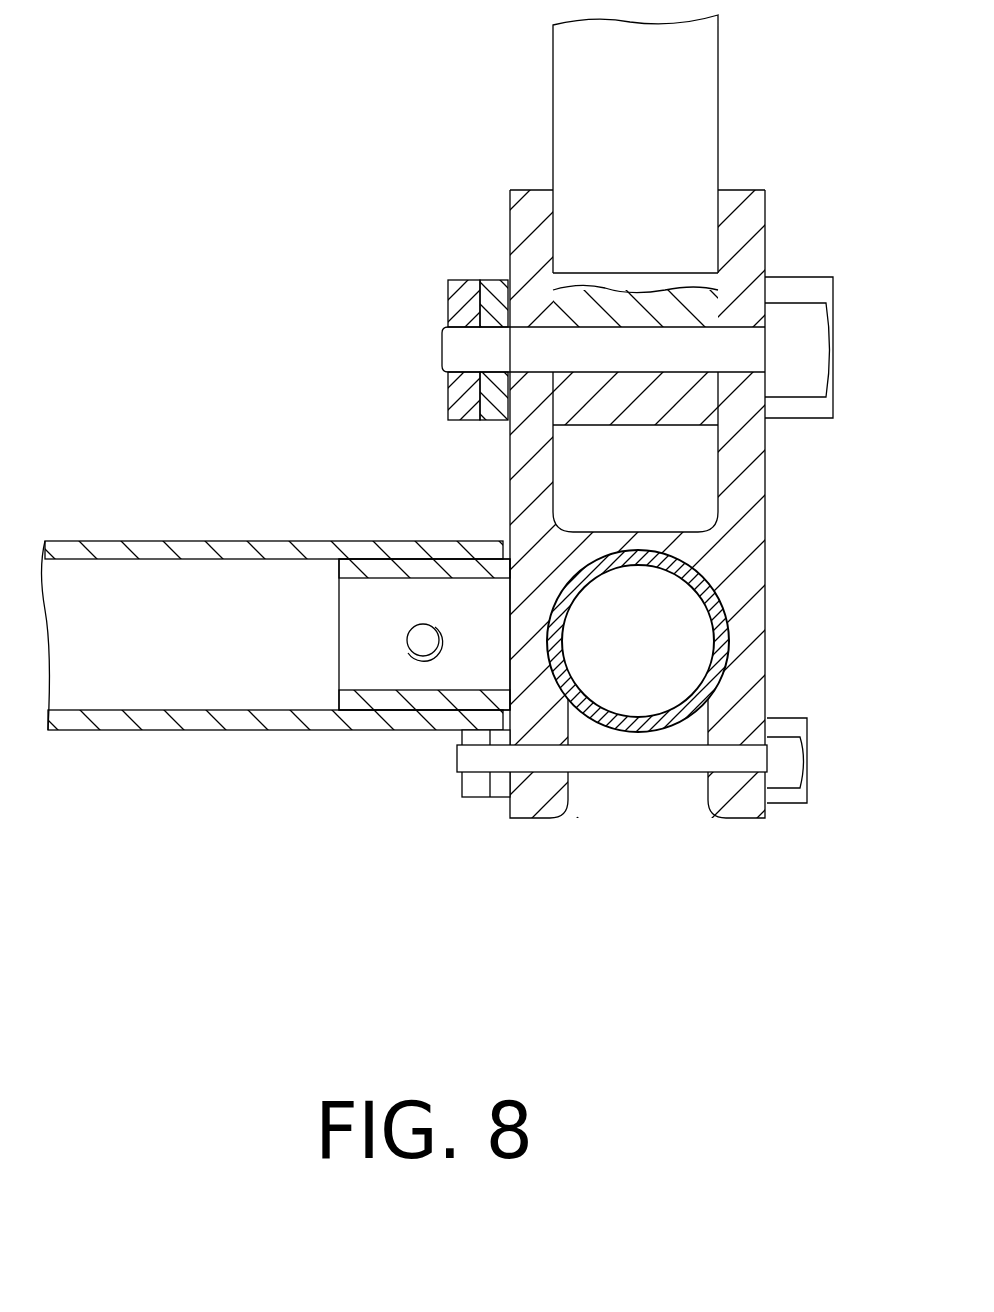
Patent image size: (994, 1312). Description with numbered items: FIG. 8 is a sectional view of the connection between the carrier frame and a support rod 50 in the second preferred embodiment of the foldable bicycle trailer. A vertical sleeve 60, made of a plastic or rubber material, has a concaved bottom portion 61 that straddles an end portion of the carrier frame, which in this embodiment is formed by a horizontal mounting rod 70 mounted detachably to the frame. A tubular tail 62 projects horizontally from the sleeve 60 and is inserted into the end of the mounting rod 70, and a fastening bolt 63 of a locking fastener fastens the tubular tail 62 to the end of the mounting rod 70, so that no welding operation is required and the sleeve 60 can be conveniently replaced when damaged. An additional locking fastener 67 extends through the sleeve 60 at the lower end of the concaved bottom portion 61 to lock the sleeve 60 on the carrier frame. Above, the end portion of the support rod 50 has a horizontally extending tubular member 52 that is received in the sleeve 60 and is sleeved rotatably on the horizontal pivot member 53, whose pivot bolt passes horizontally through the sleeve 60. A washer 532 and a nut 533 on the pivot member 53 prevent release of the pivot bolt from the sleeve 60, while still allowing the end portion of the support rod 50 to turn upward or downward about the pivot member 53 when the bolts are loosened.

The support rod 50 is at (723, 58).
The tubular member 52 is at (608, 325).
The horizontal pivot member 53 is at (818, 357).
The washer 532 is at (492, 280).
The nut 533 is at (450, 280).
The vertical sleeve 60 is at (775, 490).
The concaved bottom portion 61 is at (767, 650).
The tubular tail 62 is at (362, 702).
The fastening bolt 63 is at (424, 635).
The locking fastener 67 is at (795, 762).
The horizontal mounting rod 70 is at (217, 540).